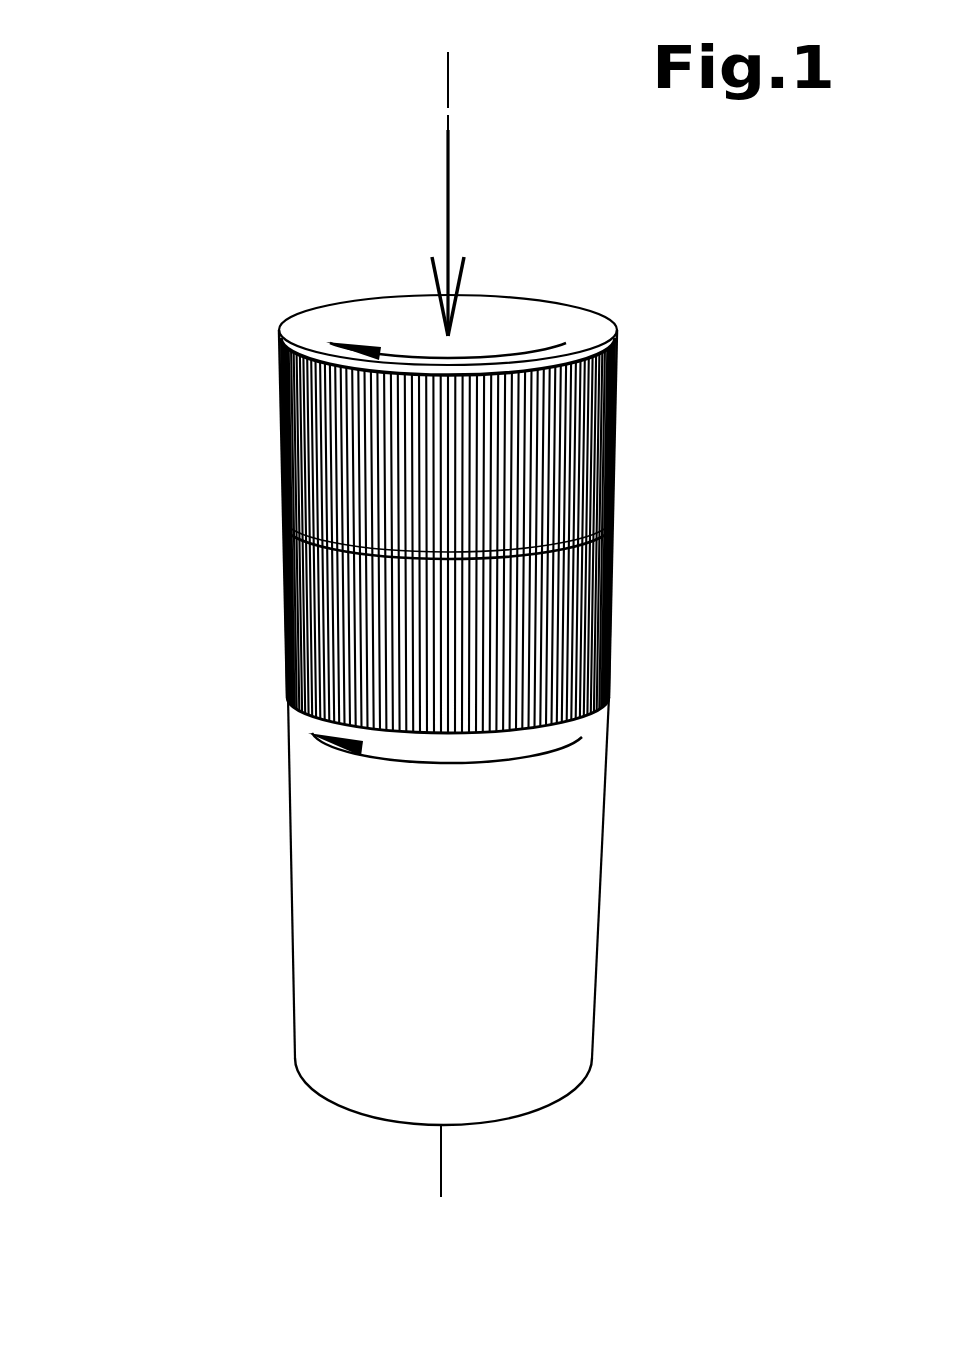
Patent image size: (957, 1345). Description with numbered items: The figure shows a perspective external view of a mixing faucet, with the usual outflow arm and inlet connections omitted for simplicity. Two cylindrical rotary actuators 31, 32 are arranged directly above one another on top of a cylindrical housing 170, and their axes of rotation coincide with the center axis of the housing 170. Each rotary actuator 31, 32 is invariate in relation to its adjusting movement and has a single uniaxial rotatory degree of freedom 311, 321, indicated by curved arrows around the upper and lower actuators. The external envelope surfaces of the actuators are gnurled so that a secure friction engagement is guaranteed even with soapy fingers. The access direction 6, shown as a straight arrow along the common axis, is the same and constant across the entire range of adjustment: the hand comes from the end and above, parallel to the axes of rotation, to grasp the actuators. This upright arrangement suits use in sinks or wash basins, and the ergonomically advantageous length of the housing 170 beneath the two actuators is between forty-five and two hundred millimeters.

The access direction 6 is at (447, 200).
The rotary actuator 31 is at (468, 462).
The rotatory degree of freedom 311 is at (483, 355).
The rotary actuator 32 is at (452, 643).
The rotatory degree of freedom 321 is at (470, 757).
The housing 170 is at (362, 923).